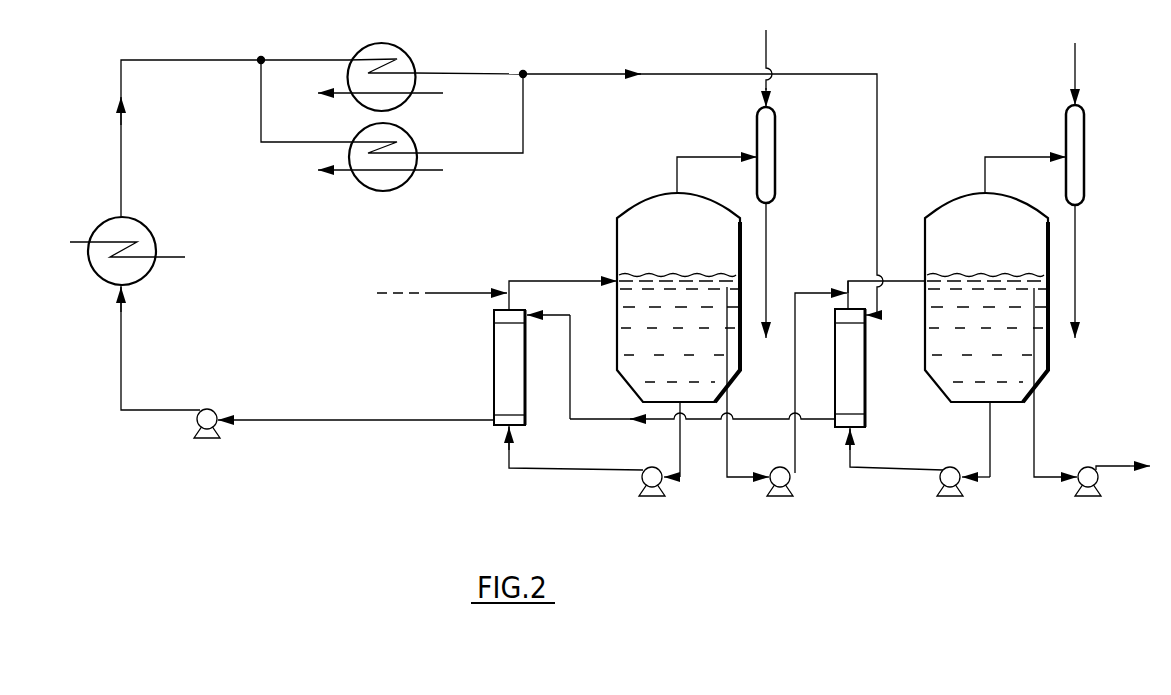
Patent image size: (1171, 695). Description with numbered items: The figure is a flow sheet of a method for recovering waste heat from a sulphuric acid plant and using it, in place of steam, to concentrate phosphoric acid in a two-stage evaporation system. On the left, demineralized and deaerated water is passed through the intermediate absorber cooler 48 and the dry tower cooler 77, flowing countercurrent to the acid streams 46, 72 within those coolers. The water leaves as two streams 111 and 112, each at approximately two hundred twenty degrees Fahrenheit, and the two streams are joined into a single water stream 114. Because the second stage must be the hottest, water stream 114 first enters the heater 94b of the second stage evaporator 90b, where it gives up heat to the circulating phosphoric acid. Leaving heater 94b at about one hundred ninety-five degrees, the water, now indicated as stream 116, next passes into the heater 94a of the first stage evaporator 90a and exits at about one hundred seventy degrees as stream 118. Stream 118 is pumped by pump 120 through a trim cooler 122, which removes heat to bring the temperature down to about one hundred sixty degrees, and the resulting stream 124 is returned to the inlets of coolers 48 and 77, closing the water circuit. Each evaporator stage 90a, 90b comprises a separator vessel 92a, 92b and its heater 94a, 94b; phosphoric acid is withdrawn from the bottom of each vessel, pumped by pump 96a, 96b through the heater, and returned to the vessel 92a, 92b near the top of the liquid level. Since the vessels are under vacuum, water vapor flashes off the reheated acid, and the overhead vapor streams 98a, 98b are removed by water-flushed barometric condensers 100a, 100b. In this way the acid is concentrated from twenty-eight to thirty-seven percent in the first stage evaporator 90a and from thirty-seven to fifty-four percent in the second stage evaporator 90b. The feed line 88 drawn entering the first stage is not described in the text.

The stream 124 is at (150, 60).
The intermediate absorber cooler 48 is at (412, 60).
The acid stream 46 is at (443, 94).
The water stream 111 is at (468, 73).
The water stream 112 is at (460, 153).
The sulphuric acid stream 72 is at (427, 172).
The dry tower cooler 77 is at (390, 192).
The trim cooler 122 is at (154, 242).
The pump 120 is at (215, 408).
The stream 118 is at (323, 418).
The feed line 88 is at (440, 292).
The heater 94a is at (493, 358).
The heater 94b is at (866, 383).
The water stream 116 is at (622, 422).
The first stage evaporator 90a is at (658, 318).
The second stage evaporator 90b is at (981, 318).
The separator vessel 92a is at (615, 248).
The separator vessel 92b is at (924, 240).
The pump 96a is at (640, 484).
The pump 96b is at (950, 498).
The water stream 114 is at (697, 72).
The overhead water vapor stream 98a is at (713, 156).
The overhead water vapor stream 98b is at (1009, 156).
The barometric condenser 100a is at (777, 162).
The barometric condenser 100b is at (1085, 140).